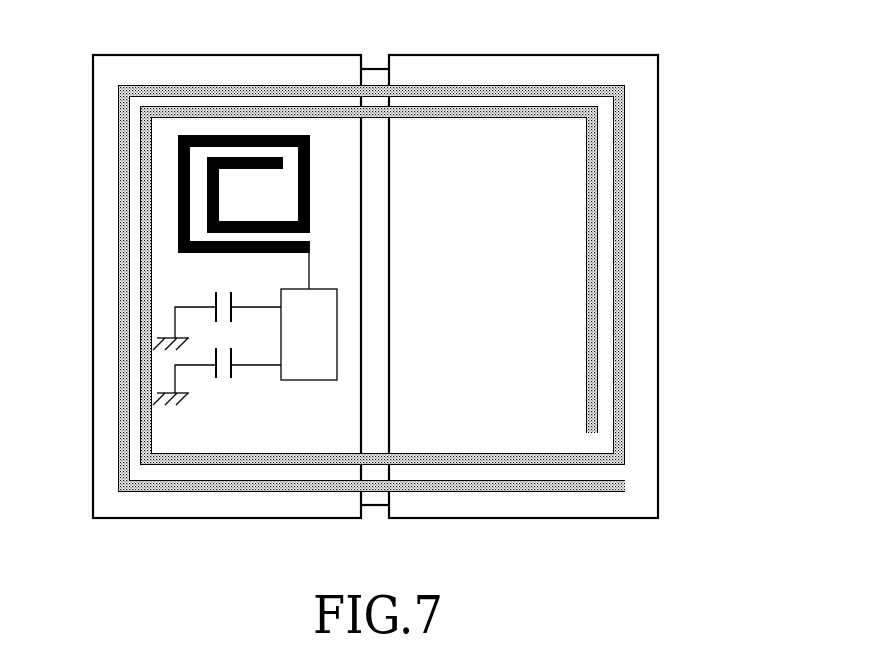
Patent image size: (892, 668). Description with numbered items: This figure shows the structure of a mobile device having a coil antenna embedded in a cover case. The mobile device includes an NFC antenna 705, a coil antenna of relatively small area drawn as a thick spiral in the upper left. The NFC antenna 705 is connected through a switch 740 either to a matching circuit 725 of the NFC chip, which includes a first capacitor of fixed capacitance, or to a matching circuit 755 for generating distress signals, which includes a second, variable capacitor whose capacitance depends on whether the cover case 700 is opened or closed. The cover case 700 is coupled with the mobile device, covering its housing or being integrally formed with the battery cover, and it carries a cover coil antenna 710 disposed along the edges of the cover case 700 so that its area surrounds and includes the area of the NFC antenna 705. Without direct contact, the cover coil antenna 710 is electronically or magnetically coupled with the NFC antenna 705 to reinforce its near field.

The cover case 700 is at (658, 380).
The NFC antenna 705 is at (310, 192).
The cover coil antenna 710 is at (625, 278).
The matching circuit 725 is at (216, 292).
The switch 740 is at (337, 335).
The matching circuit 755 is at (234, 370).